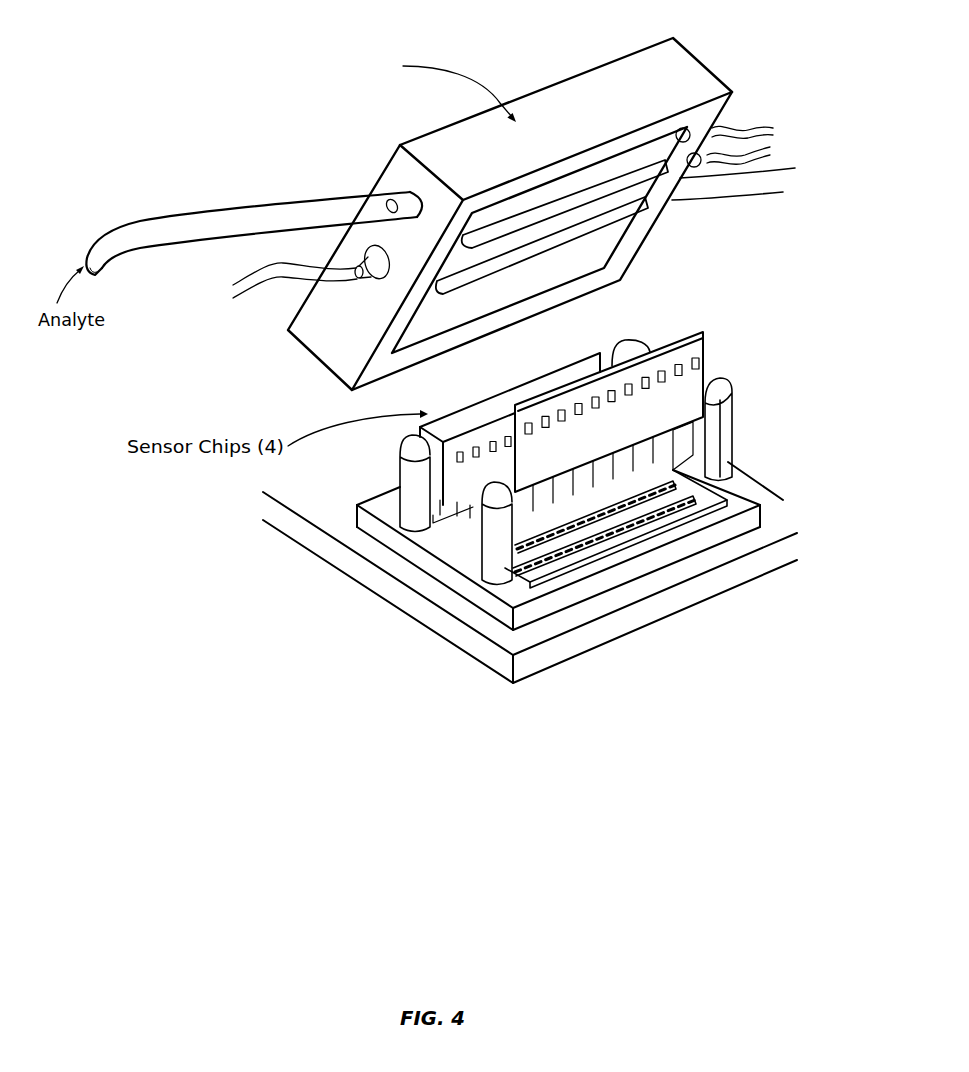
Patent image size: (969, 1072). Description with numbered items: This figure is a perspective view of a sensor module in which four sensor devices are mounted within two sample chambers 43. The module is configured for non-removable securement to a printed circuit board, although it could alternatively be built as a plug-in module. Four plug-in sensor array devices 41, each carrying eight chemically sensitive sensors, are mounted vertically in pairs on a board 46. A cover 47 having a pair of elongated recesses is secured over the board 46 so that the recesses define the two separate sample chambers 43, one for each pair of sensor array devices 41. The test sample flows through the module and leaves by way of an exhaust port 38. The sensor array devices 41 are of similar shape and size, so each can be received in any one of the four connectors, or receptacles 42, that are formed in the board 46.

The cover 47 is at (593, 82).
The sample chambers 43 is at (527, 225).
The sensor array devices 41 is at (200, 232).
The exhaust port 38 is at (770, 137).
The board 46 is at (773, 532).
The connectors 42 is at (561, 548).